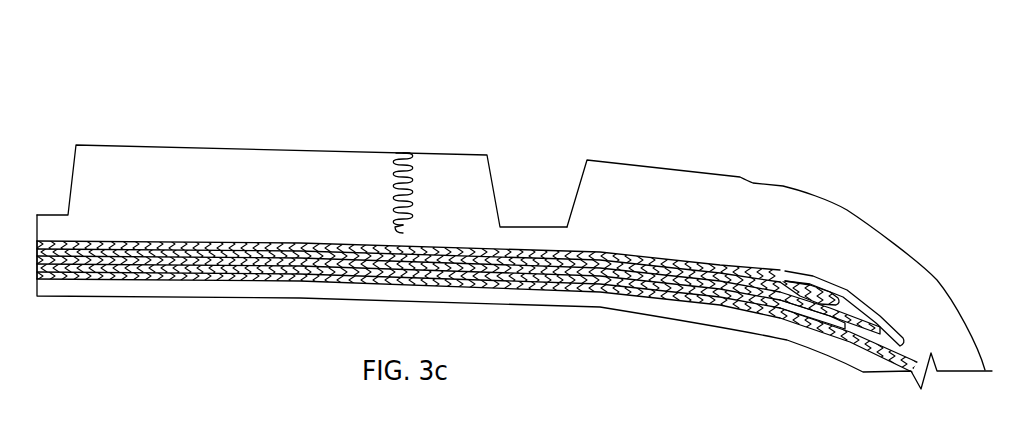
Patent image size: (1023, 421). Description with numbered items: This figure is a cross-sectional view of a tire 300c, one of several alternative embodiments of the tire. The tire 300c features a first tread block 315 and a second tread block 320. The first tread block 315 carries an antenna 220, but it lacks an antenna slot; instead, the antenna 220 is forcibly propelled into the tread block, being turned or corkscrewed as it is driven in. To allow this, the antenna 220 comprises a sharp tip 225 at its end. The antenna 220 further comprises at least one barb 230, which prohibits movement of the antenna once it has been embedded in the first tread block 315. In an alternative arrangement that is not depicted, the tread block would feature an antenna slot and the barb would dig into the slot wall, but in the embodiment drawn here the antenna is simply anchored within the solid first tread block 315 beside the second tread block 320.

The tire 300c is at (150, 60).
The first tread block 315 is at (133, 151).
The second tread block 320 is at (650, 177).
The antenna 220 is at (403, 153).
The barb 230 is at (390, 183).
The sharp tip 225 is at (403, 233).